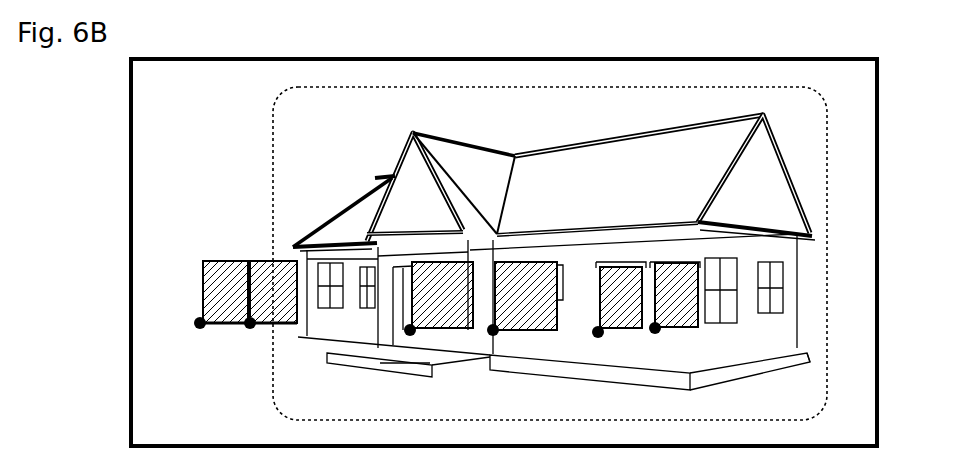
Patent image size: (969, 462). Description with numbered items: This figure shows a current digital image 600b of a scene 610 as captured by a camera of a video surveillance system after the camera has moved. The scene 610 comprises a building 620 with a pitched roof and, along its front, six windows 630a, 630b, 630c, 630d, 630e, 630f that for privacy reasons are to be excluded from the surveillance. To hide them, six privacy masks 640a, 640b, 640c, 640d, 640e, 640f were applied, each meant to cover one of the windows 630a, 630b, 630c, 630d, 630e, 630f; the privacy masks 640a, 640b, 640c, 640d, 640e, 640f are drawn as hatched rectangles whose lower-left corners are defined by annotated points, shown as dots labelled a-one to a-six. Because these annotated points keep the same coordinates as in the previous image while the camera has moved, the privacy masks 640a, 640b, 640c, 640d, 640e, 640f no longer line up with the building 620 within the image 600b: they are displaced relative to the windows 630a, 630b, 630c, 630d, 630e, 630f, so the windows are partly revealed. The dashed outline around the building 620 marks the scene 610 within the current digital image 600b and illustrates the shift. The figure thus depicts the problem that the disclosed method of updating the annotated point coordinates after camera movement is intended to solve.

The current digital image 600b is at (131, 265).
The scene 610 is at (272, 200).
The building 620 is at (573, 143).
The window 630a is at (313, 256).
The window 630b is at (352, 258).
The window 630c is at (558, 254).
The window 630d is at (617, 254).
The window 630e is at (700, 223).
The window 630f is at (857, 287).
The privacy mask 640a is at (228, 325).
The privacy mask 640b is at (297, 333).
The privacy mask 640c is at (458, 328).
The privacy mask 640d is at (540, 330).
The privacy mask 640e is at (633, 328).
The privacy mask 640f is at (693, 330).